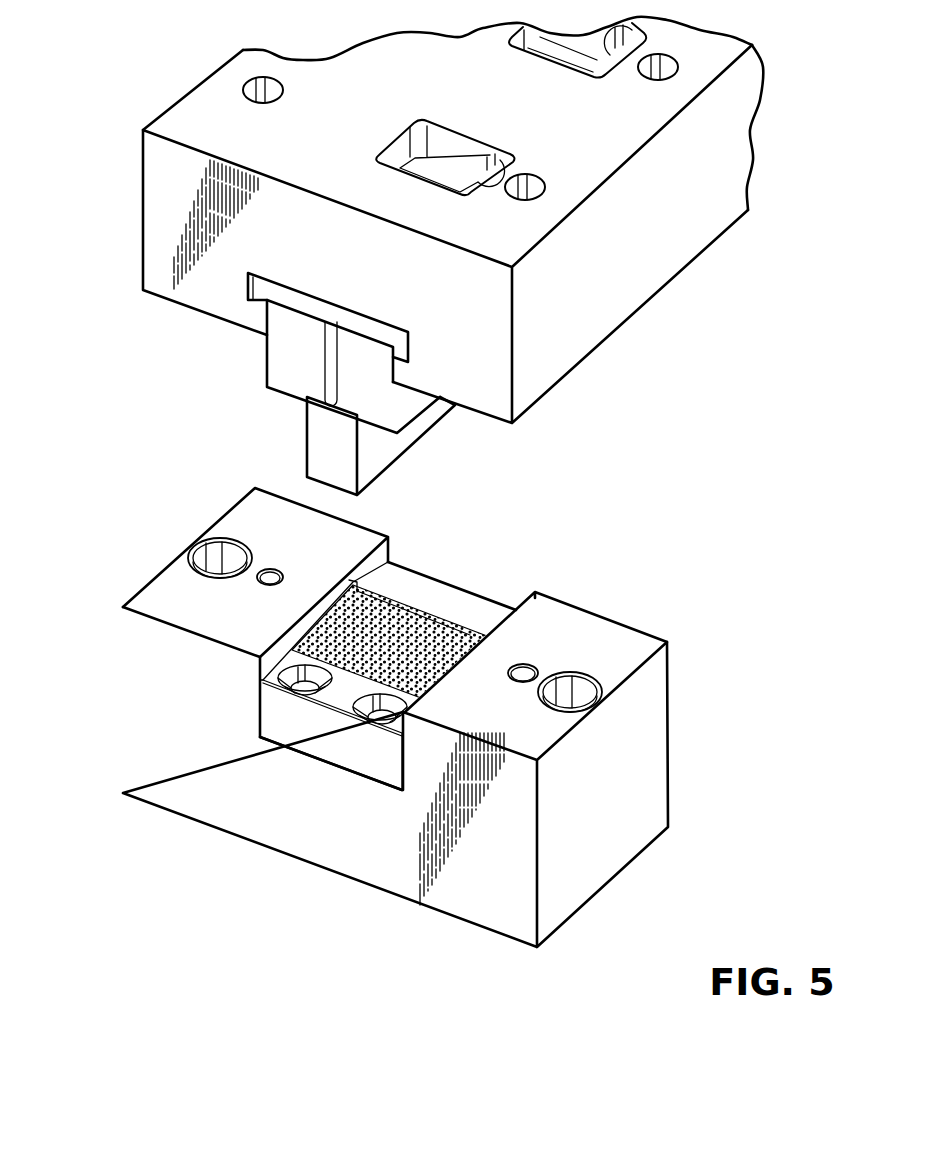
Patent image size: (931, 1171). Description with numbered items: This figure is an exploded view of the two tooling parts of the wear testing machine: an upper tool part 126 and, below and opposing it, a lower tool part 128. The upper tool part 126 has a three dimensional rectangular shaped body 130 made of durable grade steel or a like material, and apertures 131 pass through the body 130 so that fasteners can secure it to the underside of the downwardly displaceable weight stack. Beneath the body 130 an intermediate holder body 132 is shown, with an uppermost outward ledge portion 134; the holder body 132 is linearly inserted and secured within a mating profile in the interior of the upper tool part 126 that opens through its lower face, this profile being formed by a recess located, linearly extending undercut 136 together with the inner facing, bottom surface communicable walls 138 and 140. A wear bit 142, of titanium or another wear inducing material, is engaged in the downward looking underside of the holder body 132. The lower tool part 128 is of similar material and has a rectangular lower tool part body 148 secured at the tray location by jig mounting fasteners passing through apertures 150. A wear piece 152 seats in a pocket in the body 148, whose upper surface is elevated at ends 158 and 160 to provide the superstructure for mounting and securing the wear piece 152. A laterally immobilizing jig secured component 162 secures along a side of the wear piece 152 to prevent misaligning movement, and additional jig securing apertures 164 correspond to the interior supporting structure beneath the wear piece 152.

The upper tool part 126 is at (93, 135).
The lower tool part 128 is at (84, 640).
The rectangular shaped body 130 is at (595, 322).
The apertures 131 is at (268, 92).
The intermediate holder body 132 is at (278, 370).
The outward ledge portion 134 is at (248, 283).
The undercut 136 is at (410, 348).
The bottom surface communicable wall 138 is at (393, 380).
The bottom surface communicable wall 140 is at (267, 342).
The wear bit 142 is at (313, 430).
The lower tool part body 148 is at (318, 840).
The apertures 150 is at (218, 550).
The wear piece 152 is at (430, 630).
The elevated end 158 is at (162, 602).
The elevated end 160 is at (588, 628).
The laterally immobilizing jig secured component 162 is at (302, 735).
The jig securing apertures 164 is at (265, 583).